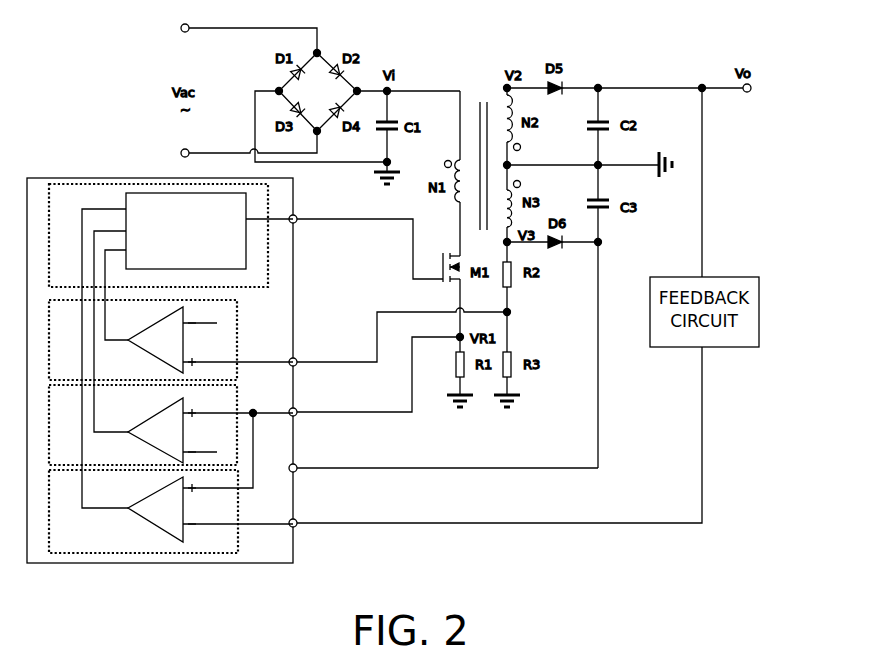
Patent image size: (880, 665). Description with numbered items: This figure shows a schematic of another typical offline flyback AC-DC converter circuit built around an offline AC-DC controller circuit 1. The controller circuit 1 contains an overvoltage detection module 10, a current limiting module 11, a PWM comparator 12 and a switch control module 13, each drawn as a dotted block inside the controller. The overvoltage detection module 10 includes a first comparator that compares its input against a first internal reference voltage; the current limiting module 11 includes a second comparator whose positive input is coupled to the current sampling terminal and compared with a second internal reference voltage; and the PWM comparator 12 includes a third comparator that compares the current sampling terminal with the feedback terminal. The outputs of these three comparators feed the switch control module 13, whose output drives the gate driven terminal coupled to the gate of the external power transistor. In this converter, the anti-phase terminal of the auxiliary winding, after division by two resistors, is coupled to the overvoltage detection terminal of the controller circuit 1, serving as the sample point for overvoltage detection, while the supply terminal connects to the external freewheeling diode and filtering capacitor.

The offline AC-DC controller circuit 1 is at (180, 370).
The overvoltage detection module 10 is at (171, 340).
The current limiting module 11 is at (171, 425).
The PWM comparator 12 is at (171, 483).
The switch control module 13 is at (171, 235).